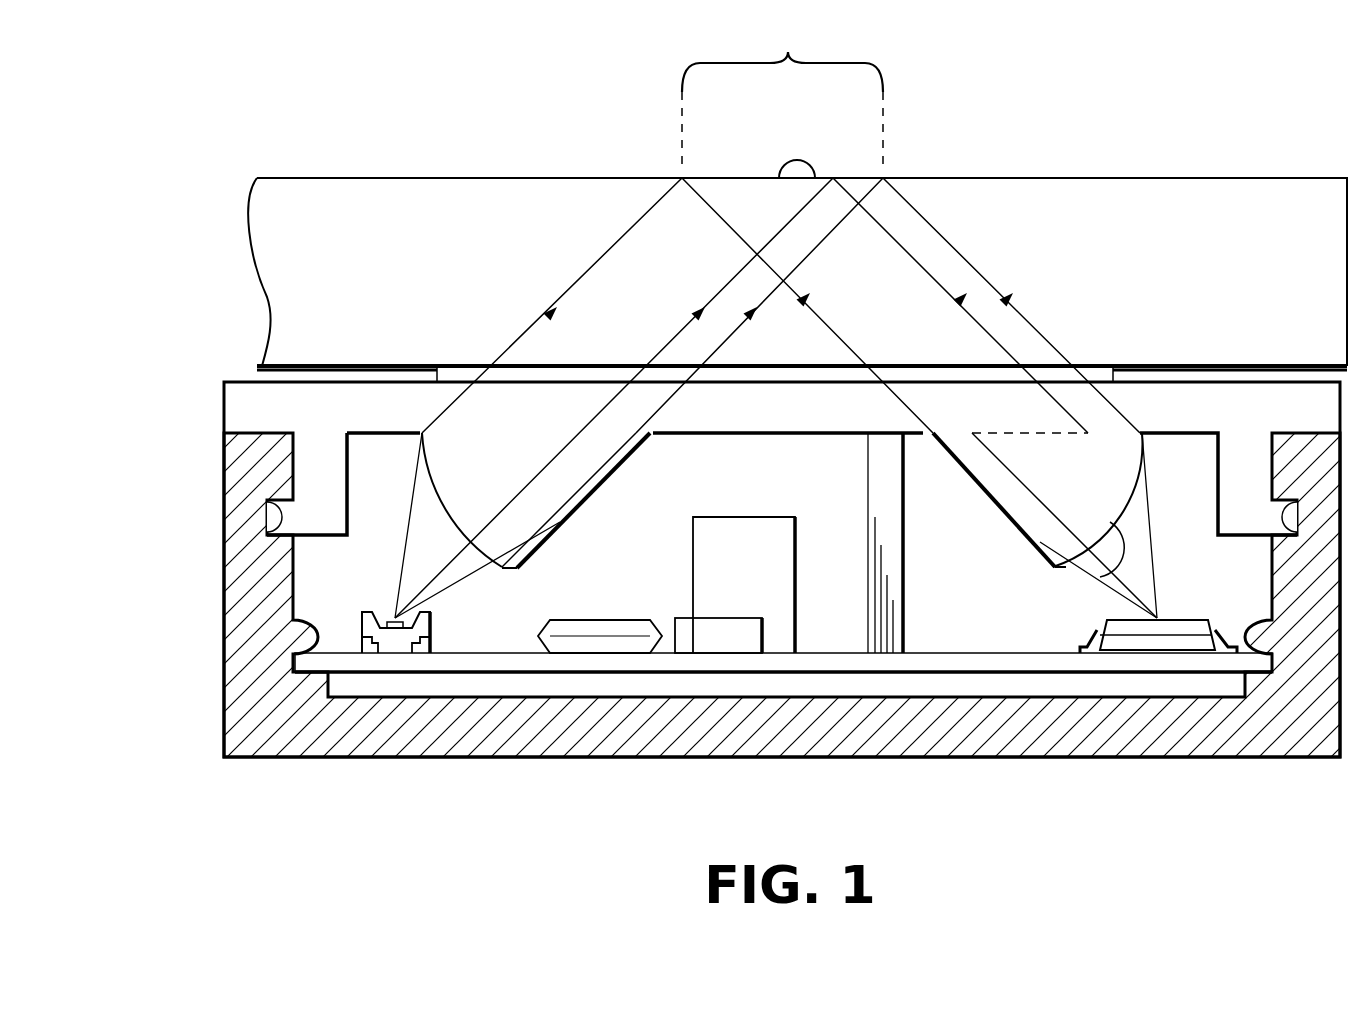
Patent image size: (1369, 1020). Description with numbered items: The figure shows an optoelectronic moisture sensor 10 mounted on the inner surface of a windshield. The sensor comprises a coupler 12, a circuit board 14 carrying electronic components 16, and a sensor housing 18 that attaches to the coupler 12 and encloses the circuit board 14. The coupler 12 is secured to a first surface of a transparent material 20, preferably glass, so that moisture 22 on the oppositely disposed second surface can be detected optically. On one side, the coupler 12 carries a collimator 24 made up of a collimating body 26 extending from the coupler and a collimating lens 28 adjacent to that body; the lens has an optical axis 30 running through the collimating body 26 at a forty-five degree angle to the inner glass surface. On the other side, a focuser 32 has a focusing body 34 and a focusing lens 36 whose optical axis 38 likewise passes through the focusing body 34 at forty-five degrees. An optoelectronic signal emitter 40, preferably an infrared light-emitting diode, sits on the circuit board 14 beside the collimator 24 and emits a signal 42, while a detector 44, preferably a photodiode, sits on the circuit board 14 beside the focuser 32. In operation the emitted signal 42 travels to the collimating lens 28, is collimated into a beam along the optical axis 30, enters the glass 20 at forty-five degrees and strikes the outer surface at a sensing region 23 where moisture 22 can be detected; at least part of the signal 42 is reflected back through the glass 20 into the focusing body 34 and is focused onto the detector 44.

The optoelectronic moisture sensor 10 is at (197, 403).
The coupler 12 is at (243, 382).
The circuit board 14 is at (460, 672).
The electronic components 16 is at (627, 645).
The sensor housing 18 is at (224, 660).
The transparent material 20 is at (325, 178).
The moisture 22 is at (805, 165).
The sensing region 23 is at (782, 88).
The collimator 24 is at (611, 525).
The collimating body 26 is at (565, 525).
The collimating lens 28 is at (480, 560).
The optical axis 30 is at (563, 455).
The focuser 32 is at (1035, 532).
The focusing body 34 is at (965, 483).
The focusing lens 36 is at (1118, 560).
The optical axis 38 is at (1023, 483).
The optoelectronic signal emitter 40 is at (392, 645).
The signal 42 is at (608, 248).
The detector 44 is at (1142, 640).